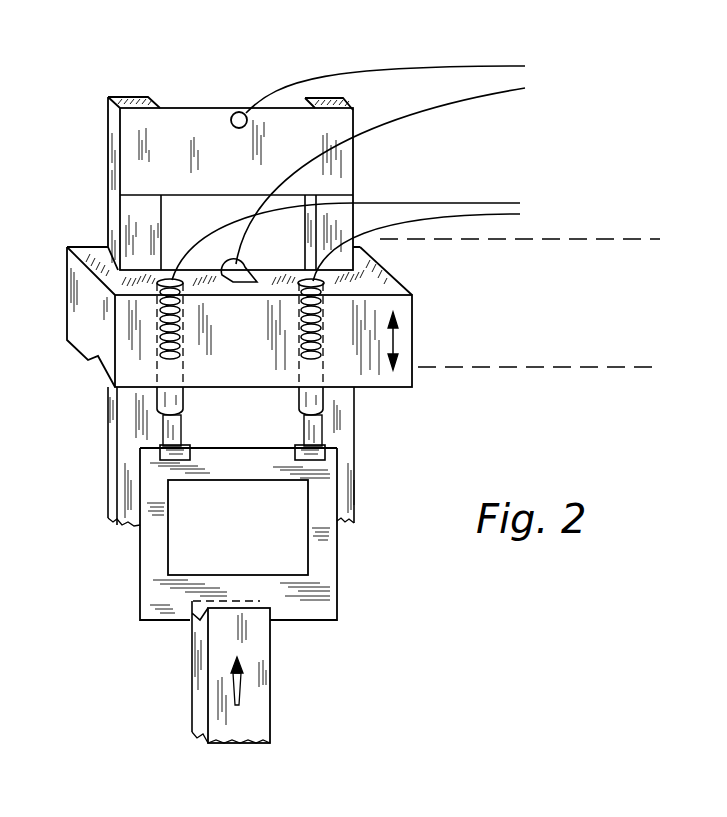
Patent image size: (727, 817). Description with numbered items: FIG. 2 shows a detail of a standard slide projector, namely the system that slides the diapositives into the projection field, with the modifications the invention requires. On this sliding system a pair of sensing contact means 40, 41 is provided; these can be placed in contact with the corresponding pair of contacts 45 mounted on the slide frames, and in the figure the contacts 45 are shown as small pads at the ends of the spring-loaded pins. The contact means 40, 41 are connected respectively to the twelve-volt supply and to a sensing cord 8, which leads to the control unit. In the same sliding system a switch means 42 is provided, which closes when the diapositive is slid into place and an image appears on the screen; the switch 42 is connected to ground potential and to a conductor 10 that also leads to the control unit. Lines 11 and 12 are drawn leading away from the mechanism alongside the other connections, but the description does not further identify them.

The sensing cord 8 is at (510, 214).
The conductor 10 is at (497, 90).
The support lever 11 is at (496, 64).
The guide rod 12 is at (495, 202).
The contact means 40 is at (184, 403).
The contact means 41 is at (299, 403).
The switch means 42 is at (232, 114).
The contact means 45 is at (295, 452).